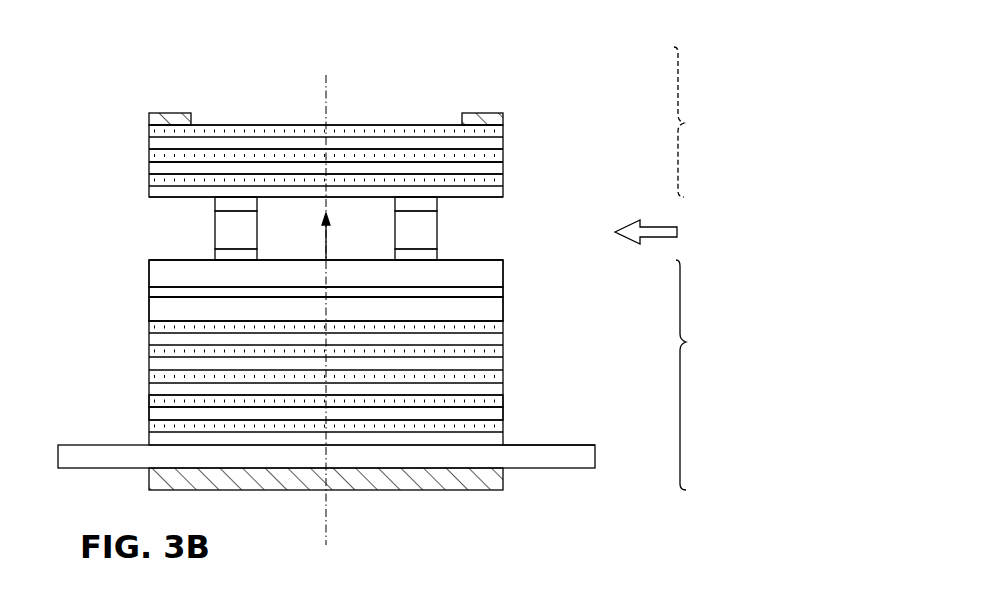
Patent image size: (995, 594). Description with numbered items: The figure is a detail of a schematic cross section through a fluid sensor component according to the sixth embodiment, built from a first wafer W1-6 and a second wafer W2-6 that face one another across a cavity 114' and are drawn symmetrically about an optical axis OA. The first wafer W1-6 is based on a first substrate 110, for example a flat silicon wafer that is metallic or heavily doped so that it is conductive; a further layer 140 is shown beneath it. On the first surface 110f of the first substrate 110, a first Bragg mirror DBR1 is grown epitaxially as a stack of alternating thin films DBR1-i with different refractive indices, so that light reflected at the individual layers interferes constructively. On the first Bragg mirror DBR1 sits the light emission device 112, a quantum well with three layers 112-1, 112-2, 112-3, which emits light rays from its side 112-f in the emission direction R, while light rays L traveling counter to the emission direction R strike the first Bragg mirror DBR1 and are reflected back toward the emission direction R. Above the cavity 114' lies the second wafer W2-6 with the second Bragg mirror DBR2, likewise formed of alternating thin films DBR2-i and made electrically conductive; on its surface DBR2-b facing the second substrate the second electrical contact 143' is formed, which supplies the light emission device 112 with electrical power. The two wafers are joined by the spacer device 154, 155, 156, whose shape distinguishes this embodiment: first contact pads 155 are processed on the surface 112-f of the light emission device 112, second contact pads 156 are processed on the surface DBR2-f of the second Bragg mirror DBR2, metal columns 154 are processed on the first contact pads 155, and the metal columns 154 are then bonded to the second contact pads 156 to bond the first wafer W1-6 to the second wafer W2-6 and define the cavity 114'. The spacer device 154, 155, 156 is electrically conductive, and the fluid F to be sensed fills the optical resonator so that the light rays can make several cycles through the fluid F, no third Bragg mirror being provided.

The second electrical contact 143' is at (333, 85).
The surface of the second Bragg mirror facing the second substrate DBR2-b is at (254, 124).
The cavity 114' is at (327, 172).
The second Bragg mirror DBR2 is at (149, 125).
The first thin film of the second Bragg mirror DBR2-i is at (497, 166).
The surface of the second Bragg mirror facing away from the second substrate DBR2-f is at (497, 200).
The second contact pads 156 is at (228, 205).
The metal columns 154 is at (240, 228).
The first contact pads 155 is at (228, 252).
The emission direction R is at (322, 232).
The light rays L is at (328, 243).
The side of the light emission device facing away from the first Bragg mirror 112-f is at (158, 259).
The light emission device 112 is at (149, 260).
The third layer of the light emission device 112-3 is at (500, 270).
The second layer of the light emission device 112-2 is at (498, 289).
The first layer of the light emission device 112-1 is at (498, 312).
The first Bragg mirror DBR1 is at (149, 321).
The first thin film of the first Bragg mirror DBR1-i is at (500, 413).
The first substrate 110 is at (568, 458).
The first surface of the first substrate 110f is at (565, 442).
The bottom contact 140 is at (488, 490).
The fluid F is at (677, 232).
The second wafer W2-6 is at (710, 122).
The first wafer W1-6 is at (711, 375).
The optical axis OA is at (328, 524).